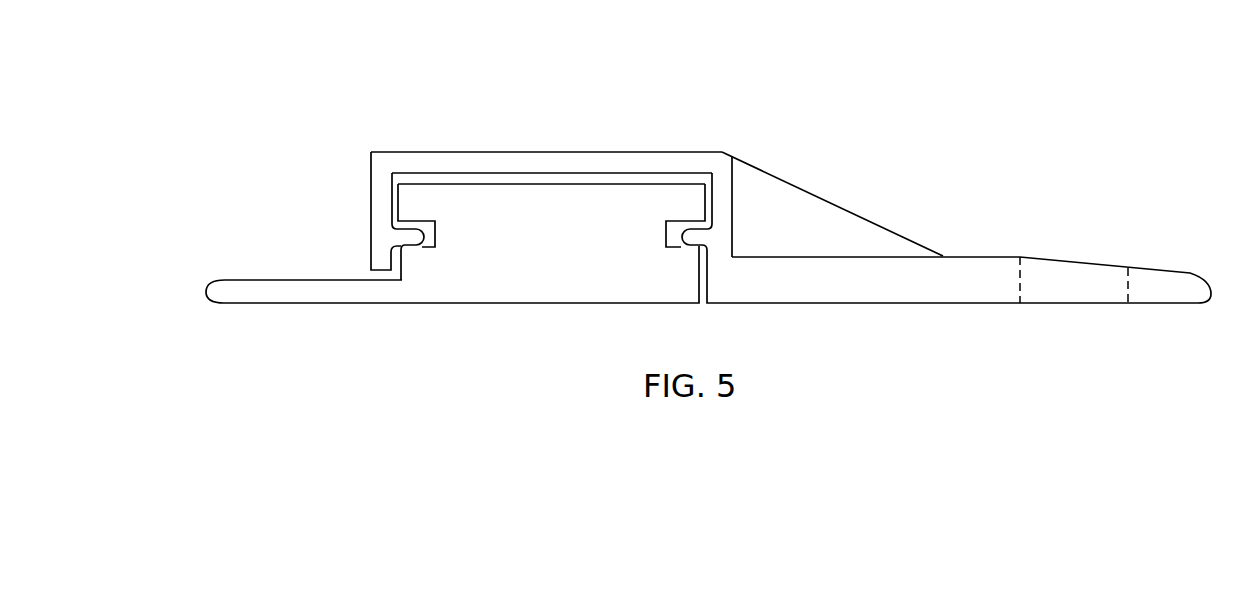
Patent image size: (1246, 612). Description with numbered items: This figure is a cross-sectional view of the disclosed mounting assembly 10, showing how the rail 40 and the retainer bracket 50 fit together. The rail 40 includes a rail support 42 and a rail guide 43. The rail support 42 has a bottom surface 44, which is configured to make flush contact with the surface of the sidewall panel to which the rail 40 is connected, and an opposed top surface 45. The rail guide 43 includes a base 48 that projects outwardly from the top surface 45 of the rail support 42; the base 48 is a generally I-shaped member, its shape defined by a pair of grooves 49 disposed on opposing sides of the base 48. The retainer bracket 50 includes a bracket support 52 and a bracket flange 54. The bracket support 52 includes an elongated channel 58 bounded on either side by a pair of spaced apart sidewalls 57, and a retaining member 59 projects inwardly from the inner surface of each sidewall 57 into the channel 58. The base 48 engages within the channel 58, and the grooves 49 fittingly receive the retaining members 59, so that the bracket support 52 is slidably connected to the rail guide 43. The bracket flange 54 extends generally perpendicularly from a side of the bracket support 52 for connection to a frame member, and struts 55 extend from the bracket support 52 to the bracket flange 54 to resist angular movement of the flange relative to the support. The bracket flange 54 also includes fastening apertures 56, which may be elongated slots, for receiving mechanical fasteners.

The sign assembly 10 is at (266, 113).
The rail 40 is at (237, 335).
The rail support 42 is at (334, 293).
The rail guide 43 is at (478, 253).
The bottom surface 44 is at (271, 303).
The top surface 45 is at (262, 279).
The base 48 is at (558, 232).
The grooves 49 is at (437, 229).
The retainer bracket 50 is at (949, 159).
The bracket support 52 is at (383, 151).
The bracket flange 54 is at (911, 296).
The struts 55 is at (806, 190).
The fastening apertures 56 is at (1077, 270).
The sidewalls 57 is at (371, 187).
The channel 58 is at (498, 182).
The retaining members 59 is at (412, 238).